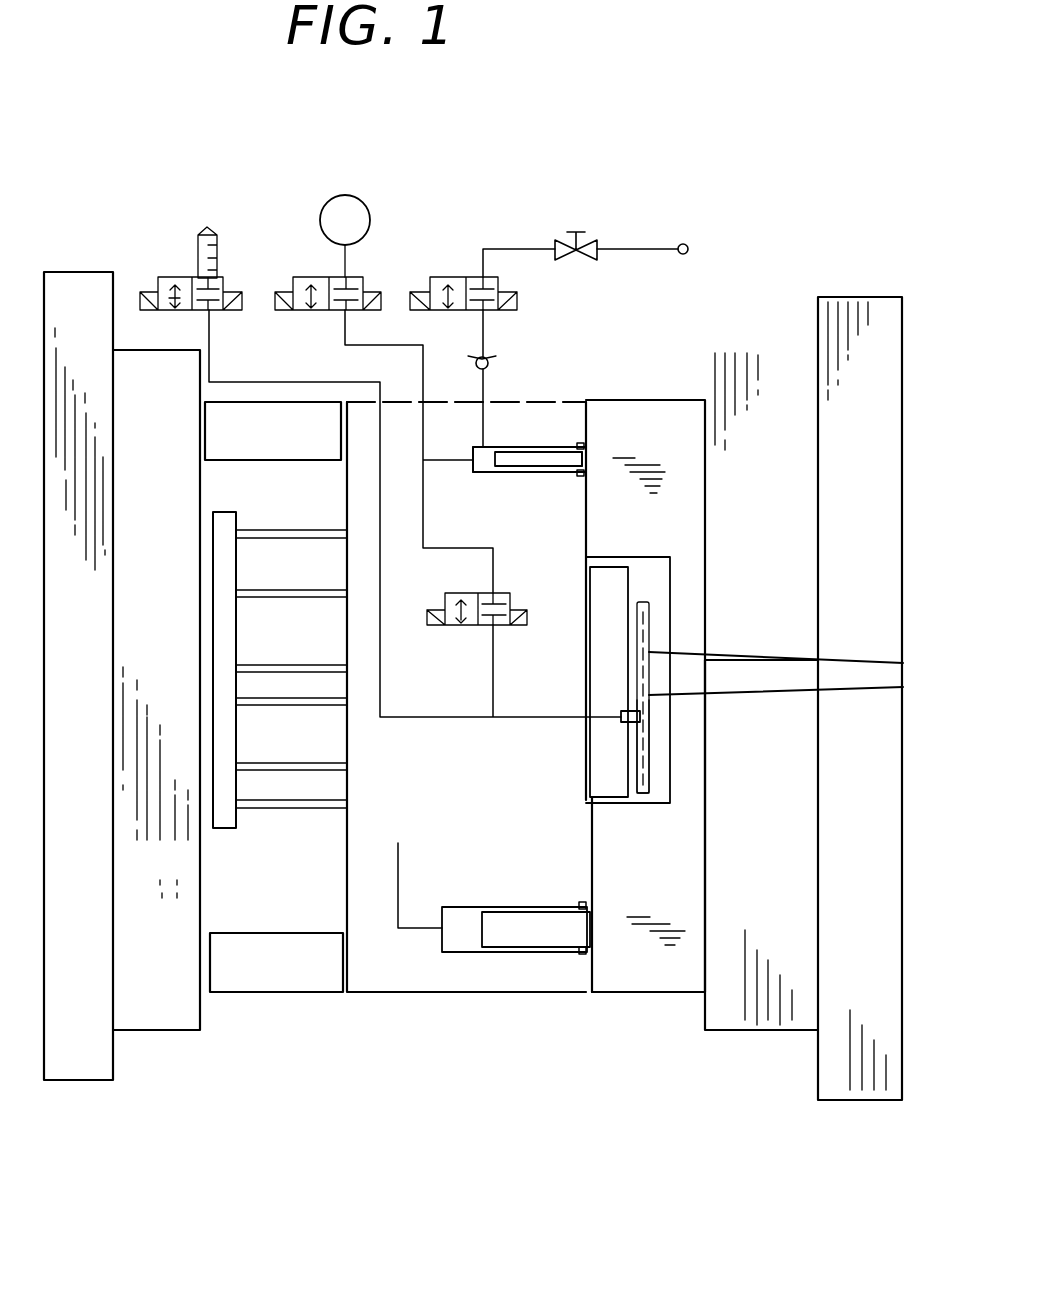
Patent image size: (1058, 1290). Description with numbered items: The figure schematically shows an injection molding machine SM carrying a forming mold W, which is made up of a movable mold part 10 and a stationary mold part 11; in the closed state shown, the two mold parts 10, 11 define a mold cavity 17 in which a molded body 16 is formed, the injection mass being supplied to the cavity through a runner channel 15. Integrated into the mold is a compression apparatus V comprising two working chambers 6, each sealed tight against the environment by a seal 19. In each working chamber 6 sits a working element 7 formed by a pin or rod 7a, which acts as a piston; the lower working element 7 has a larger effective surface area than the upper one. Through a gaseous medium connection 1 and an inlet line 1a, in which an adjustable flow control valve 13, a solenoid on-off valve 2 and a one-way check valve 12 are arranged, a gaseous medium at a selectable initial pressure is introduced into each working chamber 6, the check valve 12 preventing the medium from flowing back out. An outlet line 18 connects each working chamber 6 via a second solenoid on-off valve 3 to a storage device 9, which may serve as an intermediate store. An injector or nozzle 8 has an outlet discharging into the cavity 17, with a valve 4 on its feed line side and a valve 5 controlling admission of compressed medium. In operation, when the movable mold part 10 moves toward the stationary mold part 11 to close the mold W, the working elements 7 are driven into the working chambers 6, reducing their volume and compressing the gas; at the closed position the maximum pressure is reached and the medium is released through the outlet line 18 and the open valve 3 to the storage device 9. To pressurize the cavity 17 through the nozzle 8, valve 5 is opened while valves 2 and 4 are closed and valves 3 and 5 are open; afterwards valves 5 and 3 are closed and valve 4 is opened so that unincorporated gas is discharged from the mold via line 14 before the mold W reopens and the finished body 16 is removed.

The gaseous medium connection 1 is at (688, 246).
The inlet line 1a is at (613, 249).
The solenoid on-off valve 2 is at (463, 282).
The second solenoid on-off valve 3 is at (323, 282).
The valve 4 is at (187, 282).
The valve 5 is at (468, 626).
The working chamber 6 is at (480, 462).
The working element 7 is at (512, 456).
The pin or rod 7a is at (540, 458).
The injector or nozzle 8 is at (640, 722).
The storage device 9 is at (368, 216).
The movable mold part 10 is at (380, 980).
The stationary mold part 11 is at (648, 744).
The one-way check valve 12 is at (490, 357).
The adjustable flow control valve 13 is at (578, 252).
The line 14 is at (357, 380).
The runner channel 15 is at (855, 683).
The molded body 16 is at (650, 625).
The mold cavity 17 is at (650, 800).
The outlet line 18 is at (460, 462).
The seal 19 is at (585, 445).
The injection molding machine SM is at (768, 304).
The compression apparatus V is at (567, 447).
The forming mold W is at (506, 783).